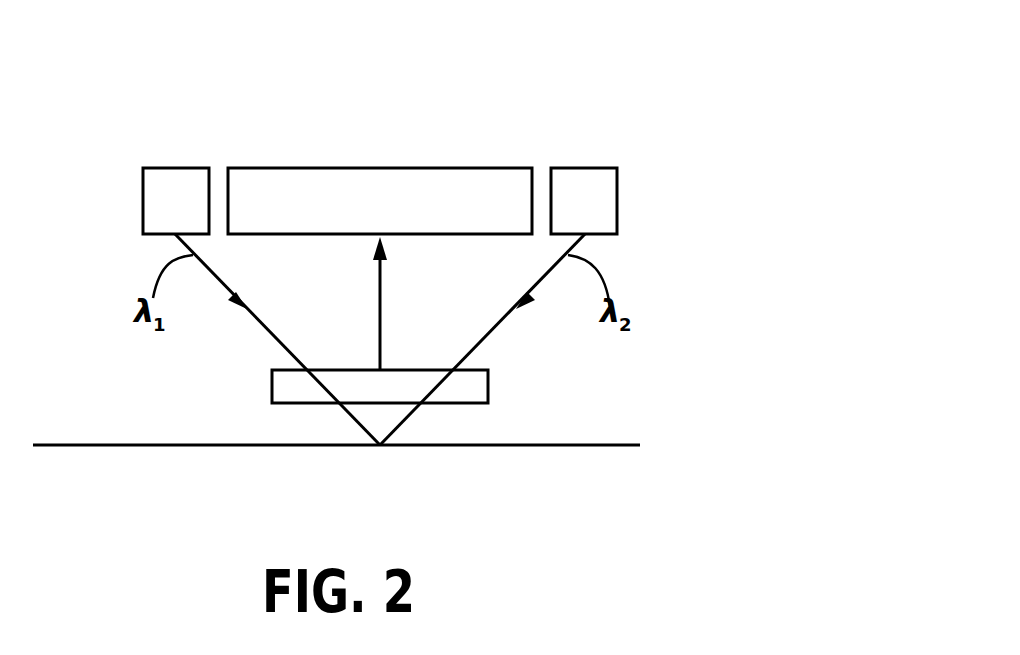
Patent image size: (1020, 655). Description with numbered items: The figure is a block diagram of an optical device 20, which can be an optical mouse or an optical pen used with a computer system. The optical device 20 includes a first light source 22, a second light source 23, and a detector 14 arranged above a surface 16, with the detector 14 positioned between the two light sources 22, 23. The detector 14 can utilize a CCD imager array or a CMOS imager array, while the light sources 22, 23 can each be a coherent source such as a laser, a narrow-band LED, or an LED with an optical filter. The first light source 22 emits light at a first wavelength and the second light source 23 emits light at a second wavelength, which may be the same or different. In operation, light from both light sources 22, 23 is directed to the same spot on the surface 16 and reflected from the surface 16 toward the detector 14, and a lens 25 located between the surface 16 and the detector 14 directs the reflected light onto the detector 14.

The optical device 20 is at (356, 30).
The first light source 22 is at (175, 190).
The second light source 23 is at (582, 190).
The detector 14 is at (353, 190).
The lens 25 is at (467, 387).
The surface 16 is at (510, 445).